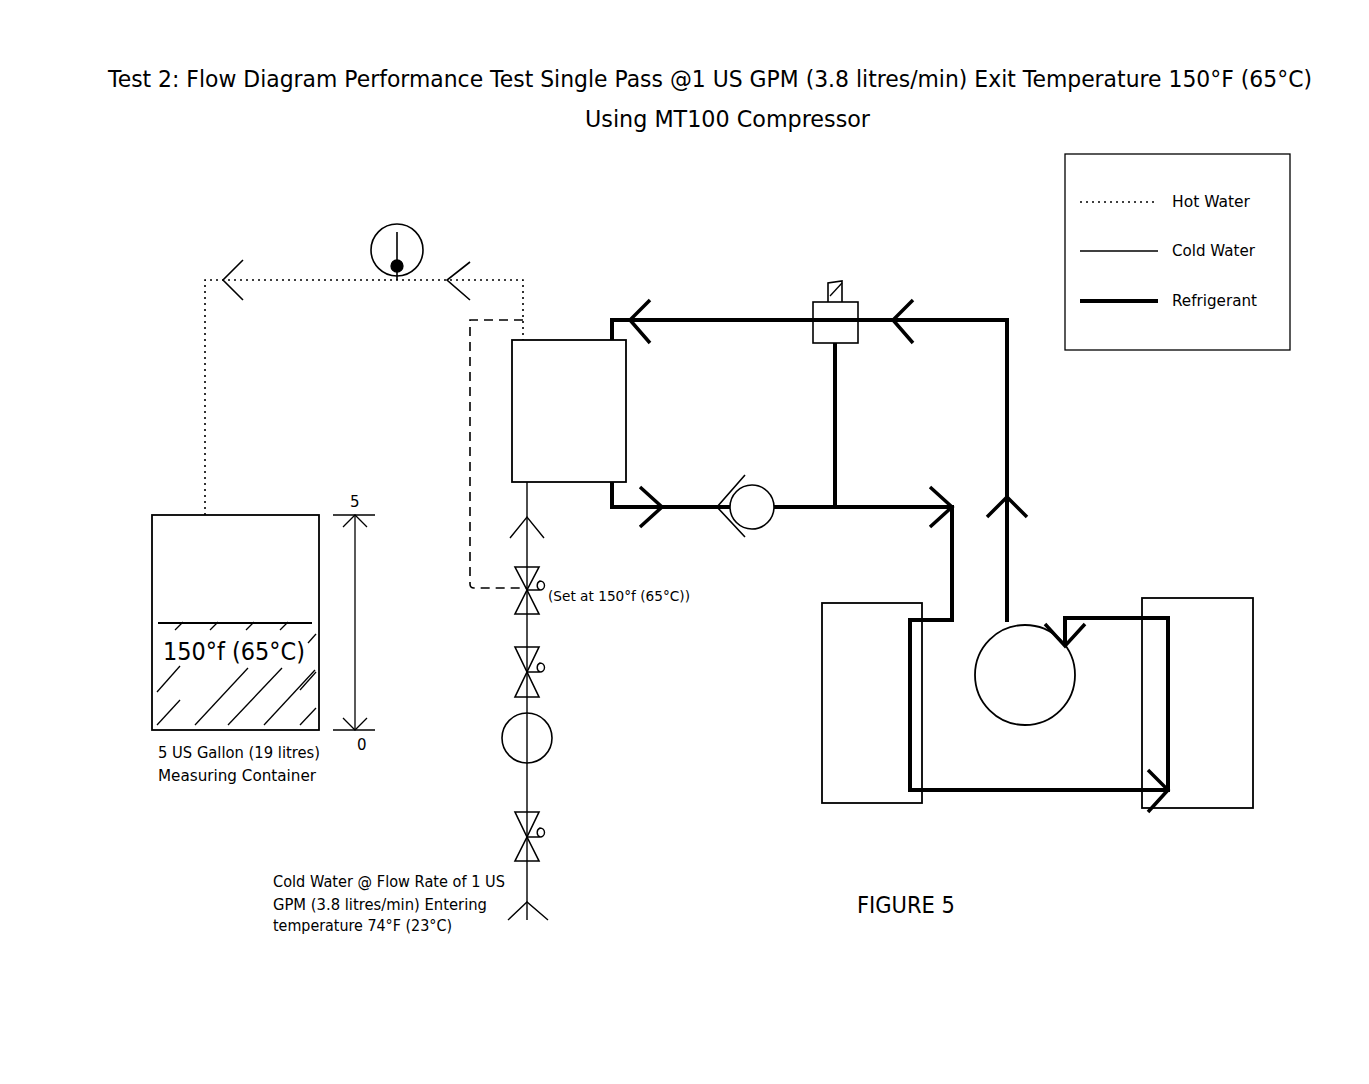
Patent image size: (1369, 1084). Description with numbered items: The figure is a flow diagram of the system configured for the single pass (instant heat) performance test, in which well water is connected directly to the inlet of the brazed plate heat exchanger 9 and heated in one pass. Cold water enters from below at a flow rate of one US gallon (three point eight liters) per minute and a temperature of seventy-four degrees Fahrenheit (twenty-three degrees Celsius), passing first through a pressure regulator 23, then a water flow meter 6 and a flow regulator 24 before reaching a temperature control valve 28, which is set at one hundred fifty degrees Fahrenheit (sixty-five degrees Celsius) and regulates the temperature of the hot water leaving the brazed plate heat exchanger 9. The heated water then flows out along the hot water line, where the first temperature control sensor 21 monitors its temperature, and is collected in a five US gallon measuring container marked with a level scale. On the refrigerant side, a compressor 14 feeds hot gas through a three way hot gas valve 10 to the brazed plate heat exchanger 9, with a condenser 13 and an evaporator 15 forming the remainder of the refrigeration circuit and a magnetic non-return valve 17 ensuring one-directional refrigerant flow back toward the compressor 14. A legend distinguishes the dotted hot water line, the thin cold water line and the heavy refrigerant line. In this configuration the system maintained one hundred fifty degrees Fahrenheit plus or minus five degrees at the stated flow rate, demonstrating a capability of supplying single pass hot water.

The temperature control sensor #1 21 is at (390, 226).
The brazed plate heat exchanger 9 is at (569, 411).
The three way hot gas valve 10 is at (828, 290).
The magnetic non-return valve 17 is at (741, 481).
The condenser 13 is at (872, 703).
The compressor 14 is at (1025, 675).
The evaporator 15 is at (1197, 703).
The temperature control valve 28 is at (520, 603).
The flow regulator 24 is at (521, 685).
The water flow meter 6 is at (503, 745).
The pressure regulator 23 is at (522, 844).